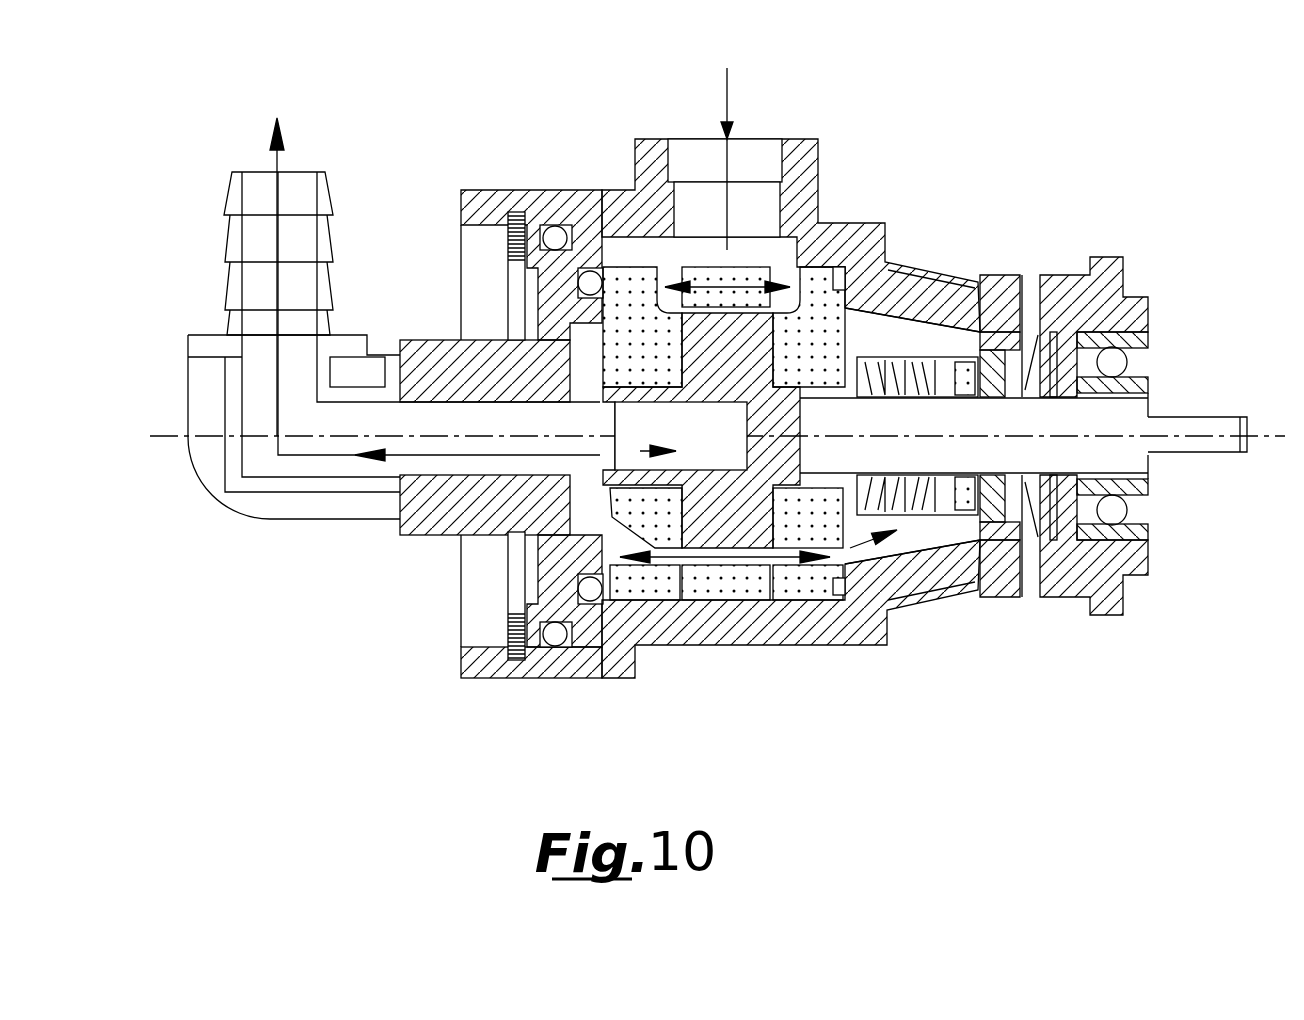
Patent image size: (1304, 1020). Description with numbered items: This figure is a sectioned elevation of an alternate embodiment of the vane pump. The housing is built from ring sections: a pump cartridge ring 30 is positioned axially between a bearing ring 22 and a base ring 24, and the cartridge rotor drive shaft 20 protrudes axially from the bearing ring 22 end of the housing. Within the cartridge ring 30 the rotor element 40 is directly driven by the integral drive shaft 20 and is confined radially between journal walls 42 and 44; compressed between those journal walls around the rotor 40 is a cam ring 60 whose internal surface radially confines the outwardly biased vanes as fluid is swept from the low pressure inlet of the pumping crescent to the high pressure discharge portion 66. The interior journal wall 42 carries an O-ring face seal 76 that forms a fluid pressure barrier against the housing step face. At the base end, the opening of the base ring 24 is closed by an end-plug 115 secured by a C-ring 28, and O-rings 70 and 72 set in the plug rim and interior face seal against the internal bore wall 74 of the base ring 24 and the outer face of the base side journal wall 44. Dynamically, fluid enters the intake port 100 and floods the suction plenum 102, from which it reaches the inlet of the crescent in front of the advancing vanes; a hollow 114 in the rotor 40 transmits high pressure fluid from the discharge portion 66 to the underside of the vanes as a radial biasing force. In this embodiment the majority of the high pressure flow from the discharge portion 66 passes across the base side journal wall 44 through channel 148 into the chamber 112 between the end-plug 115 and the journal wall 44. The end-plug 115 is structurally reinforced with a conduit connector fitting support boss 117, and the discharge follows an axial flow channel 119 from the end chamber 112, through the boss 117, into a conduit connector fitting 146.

The cartridge rotor drive shaft 20 is at (1072, 430).
The bearing ring 22 is at (1071, 580).
The base ring 24 is at (527, 673).
The C-ring 28 is at (512, 240).
The pump cartridge ring 30 is at (793, 633).
The rotor element 40 is at (760, 337).
The journal wall 42 is at (837, 347).
The journal wall 44 is at (612, 268).
The cam ring 60 is at (695, 597).
The discharge portion 66 is at (750, 560).
The O-ring 70 is at (555, 230).
The O-ring 72 is at (592, 282).
The internal bore wall 74 is at (483, 647).
The O-ring face seal 76 is at (848, 267).
The intake port 100 is at (768, 155).
The suction plenum 102 is at (700, 155).
The chamber 112 is at (585, 337).
The hollow 114 is at (683, 431).
The end-plug 115 is at (548, 593).
The conduit connector fitting support boss 117 is at (418, 527).
The axial flow channel 119 is at (367, 425).
The conduit connector fitting 146 is at (207, 395).
The channel 148 is at (613, 533).